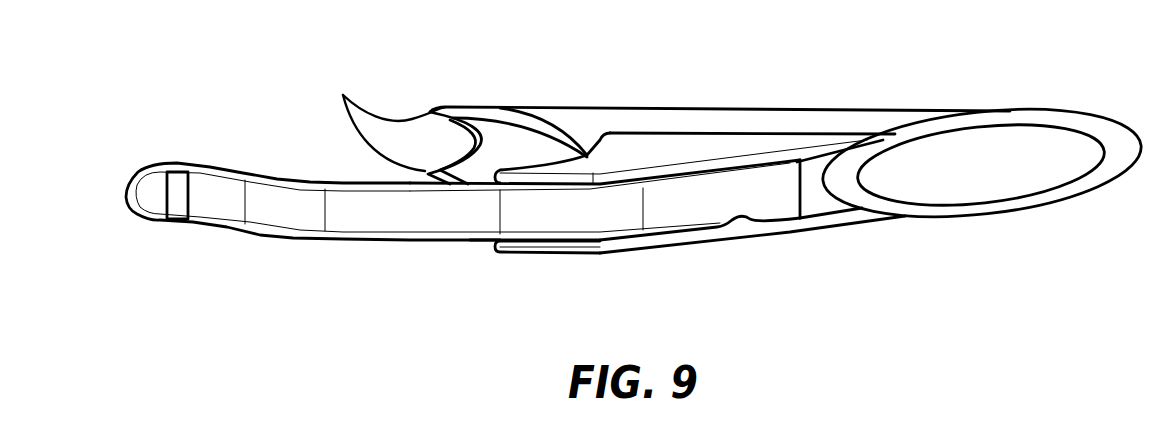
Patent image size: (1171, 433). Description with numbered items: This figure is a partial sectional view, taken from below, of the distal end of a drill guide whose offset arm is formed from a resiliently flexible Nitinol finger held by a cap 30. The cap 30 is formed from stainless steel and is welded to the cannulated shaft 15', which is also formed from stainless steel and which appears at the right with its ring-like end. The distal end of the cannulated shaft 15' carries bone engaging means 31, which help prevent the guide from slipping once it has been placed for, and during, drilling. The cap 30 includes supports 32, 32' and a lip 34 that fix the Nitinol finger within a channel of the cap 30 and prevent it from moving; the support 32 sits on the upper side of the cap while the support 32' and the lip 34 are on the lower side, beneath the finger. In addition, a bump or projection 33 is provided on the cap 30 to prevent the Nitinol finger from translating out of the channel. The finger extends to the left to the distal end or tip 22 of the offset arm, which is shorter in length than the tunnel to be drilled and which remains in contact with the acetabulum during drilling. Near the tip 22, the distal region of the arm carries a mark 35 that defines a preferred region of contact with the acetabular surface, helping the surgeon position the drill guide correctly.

The cannulated shaft 15' is at (981, 138).
The distal end or tip of the offset arm 22 is at (313, 222).
The cap 30 is at (687, 147).
The bone engaging means 31 is at (343, 95).
The support 32 is at (507, 111).
The support 32' is at (547, 286).
The bump or projection 33 is at (742, 225).
The lip 34 is at (497, 247).
The mark 35 is at (179, 212).